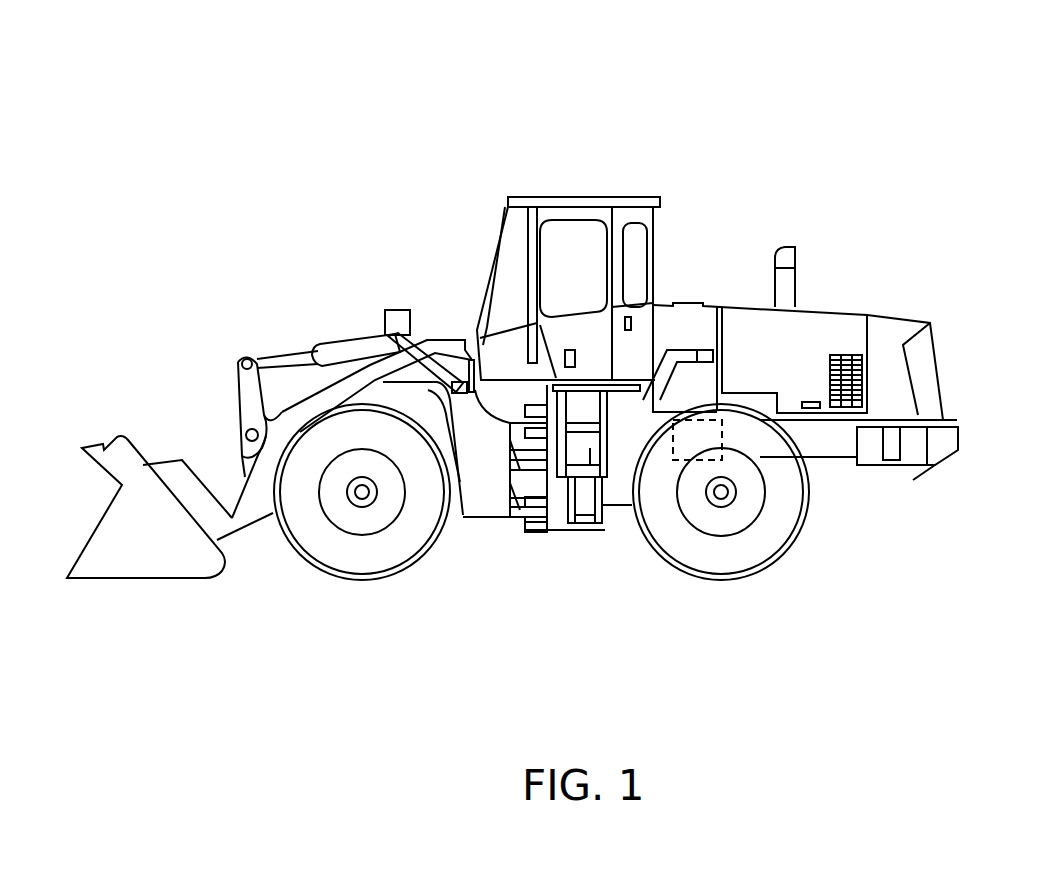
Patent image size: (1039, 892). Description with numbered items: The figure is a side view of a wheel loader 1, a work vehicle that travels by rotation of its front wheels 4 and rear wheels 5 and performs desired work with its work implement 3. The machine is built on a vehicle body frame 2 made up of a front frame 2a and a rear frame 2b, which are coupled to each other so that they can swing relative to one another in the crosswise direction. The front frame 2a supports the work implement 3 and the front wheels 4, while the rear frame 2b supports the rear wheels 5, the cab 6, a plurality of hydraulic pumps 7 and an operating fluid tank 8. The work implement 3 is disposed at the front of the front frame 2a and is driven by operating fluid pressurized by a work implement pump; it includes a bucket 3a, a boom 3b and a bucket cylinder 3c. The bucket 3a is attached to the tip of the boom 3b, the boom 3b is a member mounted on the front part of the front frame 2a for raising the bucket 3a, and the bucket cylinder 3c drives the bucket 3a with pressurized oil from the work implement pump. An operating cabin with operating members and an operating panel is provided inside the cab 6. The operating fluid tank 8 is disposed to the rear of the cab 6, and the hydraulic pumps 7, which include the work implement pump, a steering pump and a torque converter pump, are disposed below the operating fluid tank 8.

The wheel loader 1 is at (803, 122).
The vehicle body frame 2 is at (633, 614).
The front frame 2a is at (480, 503).
The rear frame 2b is at (612, 497).
The work implement 3 is at (265, 263).
The bucket 3a is at (103, 447).
The boom 3b is at (298, 420).
The bucket cylinder 3c is at (291, 362).
The front wheels 4 is at (373, 562).
The rear wheels 5 is at (737, 563).
The cab 6 is at (592, 197).
The hydraulic pumps 7 is at (735, 458).
The operating fluid tank 8 is at (678, 303).